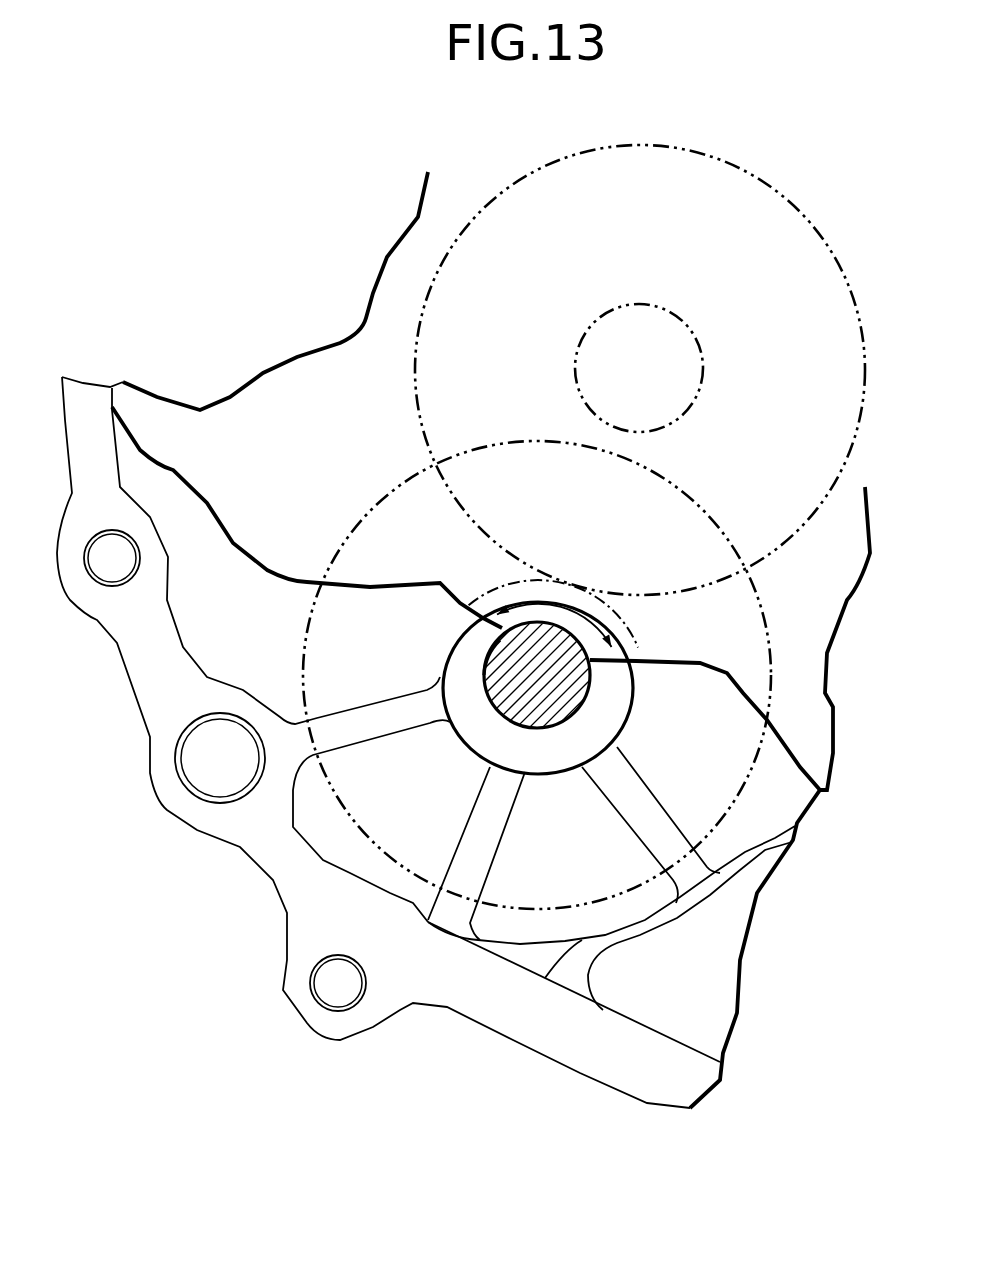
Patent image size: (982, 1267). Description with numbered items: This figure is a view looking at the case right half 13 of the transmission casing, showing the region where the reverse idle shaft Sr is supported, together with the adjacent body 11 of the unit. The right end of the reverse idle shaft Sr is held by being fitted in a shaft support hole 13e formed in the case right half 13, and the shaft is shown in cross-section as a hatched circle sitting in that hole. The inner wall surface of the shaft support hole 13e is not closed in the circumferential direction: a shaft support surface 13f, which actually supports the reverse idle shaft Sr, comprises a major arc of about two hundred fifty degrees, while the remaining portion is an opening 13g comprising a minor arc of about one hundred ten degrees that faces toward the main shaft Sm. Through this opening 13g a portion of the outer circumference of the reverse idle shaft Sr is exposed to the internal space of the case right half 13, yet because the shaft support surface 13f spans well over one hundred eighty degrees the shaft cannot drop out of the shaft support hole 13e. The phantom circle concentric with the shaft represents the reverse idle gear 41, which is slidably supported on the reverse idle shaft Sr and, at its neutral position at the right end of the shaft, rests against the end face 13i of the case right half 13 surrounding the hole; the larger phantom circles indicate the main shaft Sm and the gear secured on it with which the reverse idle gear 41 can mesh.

The engine body 11 is at (225, 888).
The case right half 13 is at (128, 683).
The shaft support hole 13e is at (555, 722).
The shaft support surface 13f is at (507, 652).
The opening 13g is at (547, 602).
The end face 13i is at (560, 758).
The reverse idle gear 41 is at (397, 487).
The main shaft Sm is at (675, 313).
The reverse idle shaft Sr is at (502, 700).